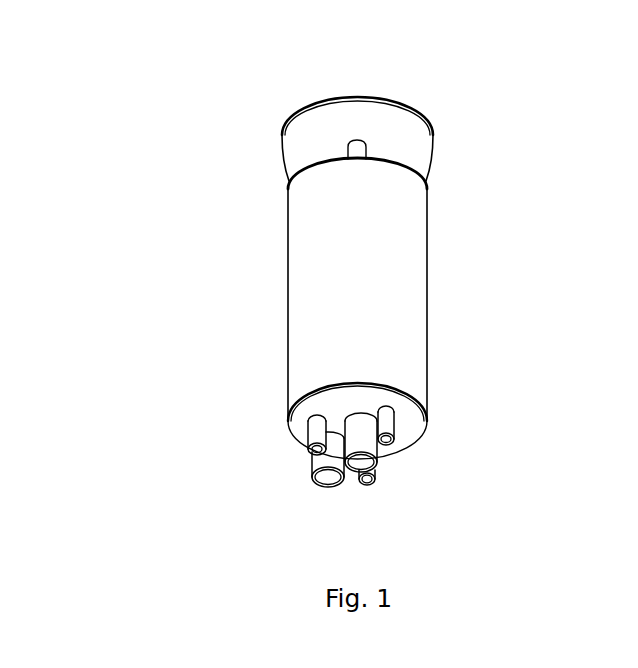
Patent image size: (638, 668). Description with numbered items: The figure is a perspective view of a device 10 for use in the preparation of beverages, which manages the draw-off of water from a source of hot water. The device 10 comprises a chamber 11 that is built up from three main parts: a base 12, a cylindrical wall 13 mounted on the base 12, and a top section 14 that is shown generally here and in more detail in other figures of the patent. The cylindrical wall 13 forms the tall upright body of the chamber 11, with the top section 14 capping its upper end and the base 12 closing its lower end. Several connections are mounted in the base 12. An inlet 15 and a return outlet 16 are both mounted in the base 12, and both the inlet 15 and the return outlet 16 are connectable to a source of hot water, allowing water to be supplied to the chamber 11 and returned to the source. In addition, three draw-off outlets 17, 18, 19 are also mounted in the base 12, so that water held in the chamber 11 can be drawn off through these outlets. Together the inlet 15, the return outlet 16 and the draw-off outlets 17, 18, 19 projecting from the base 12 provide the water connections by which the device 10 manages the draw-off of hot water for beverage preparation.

The device 10 is at (211, 210).
The chamber 11 is at (408, 232).
The base 12 is at (412, 422).
The cylindrical wall 13 is at (390, 289).
The top section 14 is at (448, 87).
The inlet 15 is at (370, 451).
The return outlet 16 is at (313, 466).
The draw-off outlet 17 is at (388, 428).
The draw-off outlet 18 is at (370, 485).
The draw-off outlet 19 is at (316, 431).